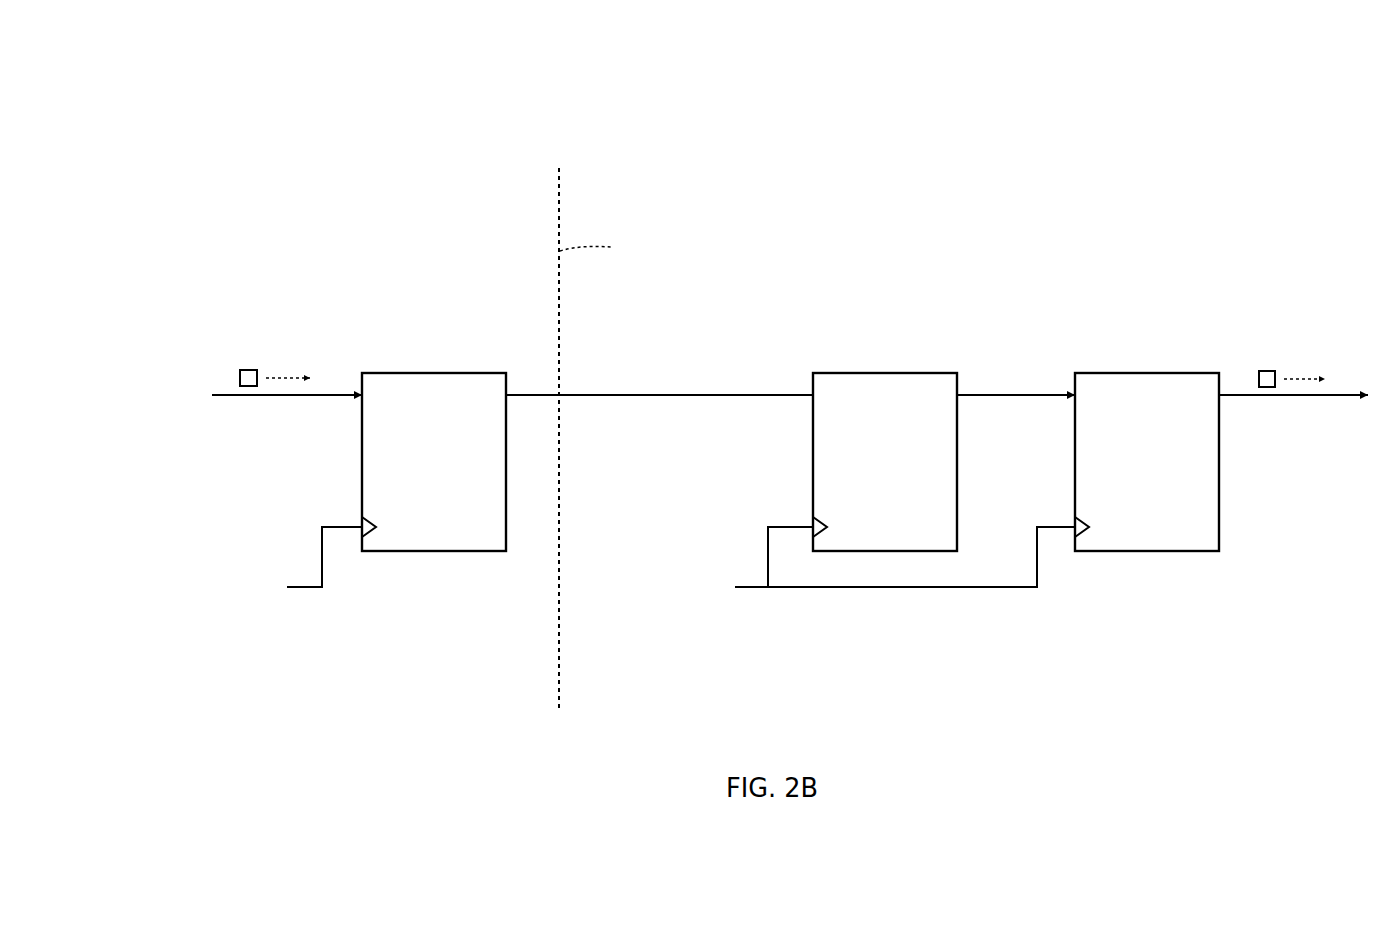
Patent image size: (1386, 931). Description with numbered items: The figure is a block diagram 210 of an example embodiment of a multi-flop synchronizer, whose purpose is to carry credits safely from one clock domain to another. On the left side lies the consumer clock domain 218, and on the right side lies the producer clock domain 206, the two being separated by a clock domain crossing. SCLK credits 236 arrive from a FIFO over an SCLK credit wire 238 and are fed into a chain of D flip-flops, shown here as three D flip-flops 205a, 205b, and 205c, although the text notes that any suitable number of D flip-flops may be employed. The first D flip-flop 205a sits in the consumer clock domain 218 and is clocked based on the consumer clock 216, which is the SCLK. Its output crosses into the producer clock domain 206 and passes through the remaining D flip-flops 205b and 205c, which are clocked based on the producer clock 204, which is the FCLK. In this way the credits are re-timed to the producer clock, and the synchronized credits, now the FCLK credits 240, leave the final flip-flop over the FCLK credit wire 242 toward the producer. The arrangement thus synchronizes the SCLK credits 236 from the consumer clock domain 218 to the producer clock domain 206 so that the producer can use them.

The block diagram 210 is at (1271, 125).
The consumer clock domain 218 is at (422, 311).
The producer clock domain 206 is at (1055, 311).
The D flip-flop 205a is at (476, 373).
The D flip-flop 205b is at (887, 373).
The D flip-flop 205c is at (1148, 373).
The SCLK credits 236 is at (240, 380).
The SCLK credit wire 238 is at (282, 396).
The FCLK credits 240 is at (1272, 371).
The FCLK credit wire 242 is at (1310, 396).
The consumer clock 216 is at (215, 644).
The producer clock 204 is at (668, 645).